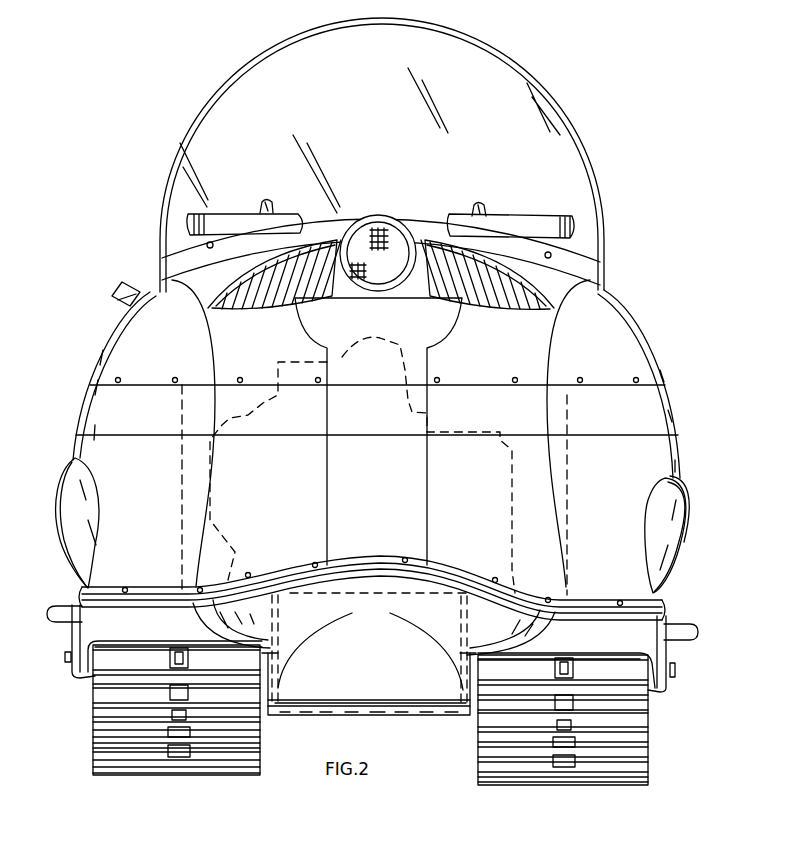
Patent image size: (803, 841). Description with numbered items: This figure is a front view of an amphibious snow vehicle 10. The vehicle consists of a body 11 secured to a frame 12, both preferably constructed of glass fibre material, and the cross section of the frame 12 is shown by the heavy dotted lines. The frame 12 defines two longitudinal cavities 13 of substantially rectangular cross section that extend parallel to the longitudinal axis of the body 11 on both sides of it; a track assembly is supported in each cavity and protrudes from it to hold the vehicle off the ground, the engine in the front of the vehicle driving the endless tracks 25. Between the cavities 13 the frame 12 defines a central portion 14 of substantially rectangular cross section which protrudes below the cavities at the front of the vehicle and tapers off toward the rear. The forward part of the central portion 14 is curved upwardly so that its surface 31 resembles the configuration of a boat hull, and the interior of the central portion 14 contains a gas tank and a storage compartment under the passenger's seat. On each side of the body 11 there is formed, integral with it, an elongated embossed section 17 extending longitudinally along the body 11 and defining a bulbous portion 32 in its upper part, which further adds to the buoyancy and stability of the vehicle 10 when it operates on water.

The amphibious snow vehicle 10 is at (409, 730).
The body 11 is at (88, 412).
The frame 12 is at (76, 664).
The longitudinal cavities 13 is at (94, 631).
The central portion 14 is at (300, 697).
The elongated embossed section 17 is at (60, 486).
The endless tracks 25 is at (642, 711).
The surface 31 is at (310, 710).
The bulbous portion 32 is at (692, 498).